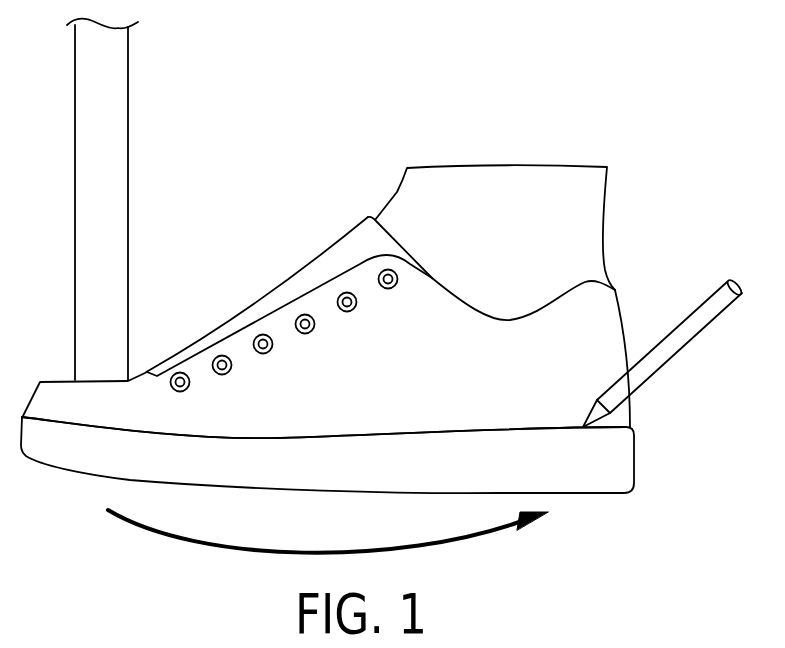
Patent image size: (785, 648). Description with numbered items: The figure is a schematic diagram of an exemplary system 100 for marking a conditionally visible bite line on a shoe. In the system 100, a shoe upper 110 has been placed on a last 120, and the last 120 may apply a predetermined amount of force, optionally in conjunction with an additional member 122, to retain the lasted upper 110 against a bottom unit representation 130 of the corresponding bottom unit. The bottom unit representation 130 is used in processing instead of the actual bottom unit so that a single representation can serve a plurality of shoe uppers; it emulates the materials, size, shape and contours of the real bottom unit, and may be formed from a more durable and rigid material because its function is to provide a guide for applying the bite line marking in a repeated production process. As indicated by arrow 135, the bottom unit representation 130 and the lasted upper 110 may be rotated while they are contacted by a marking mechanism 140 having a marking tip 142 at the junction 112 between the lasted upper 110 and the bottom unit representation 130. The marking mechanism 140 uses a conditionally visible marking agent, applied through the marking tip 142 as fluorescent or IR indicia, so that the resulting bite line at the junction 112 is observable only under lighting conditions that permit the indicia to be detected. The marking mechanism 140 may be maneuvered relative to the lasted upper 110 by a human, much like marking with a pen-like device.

The system 100 is at (380, 295).
The shoe upper 110 is at (608, 317).
The junction 112 is at (448, 428).
The last 120 is at (482, 180).
The additional member 122 is at (115, 118).
The bottom unit representation 130 is at (623, 465).
The arrow 135 is at (172, 535).
The marking mechanism 140 is at (647, 352).
The marking tip 142 is at (583, 425).